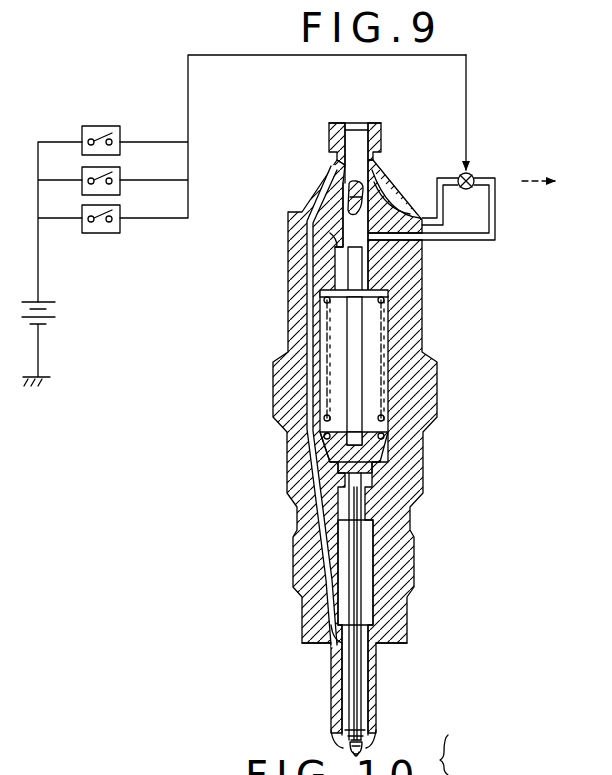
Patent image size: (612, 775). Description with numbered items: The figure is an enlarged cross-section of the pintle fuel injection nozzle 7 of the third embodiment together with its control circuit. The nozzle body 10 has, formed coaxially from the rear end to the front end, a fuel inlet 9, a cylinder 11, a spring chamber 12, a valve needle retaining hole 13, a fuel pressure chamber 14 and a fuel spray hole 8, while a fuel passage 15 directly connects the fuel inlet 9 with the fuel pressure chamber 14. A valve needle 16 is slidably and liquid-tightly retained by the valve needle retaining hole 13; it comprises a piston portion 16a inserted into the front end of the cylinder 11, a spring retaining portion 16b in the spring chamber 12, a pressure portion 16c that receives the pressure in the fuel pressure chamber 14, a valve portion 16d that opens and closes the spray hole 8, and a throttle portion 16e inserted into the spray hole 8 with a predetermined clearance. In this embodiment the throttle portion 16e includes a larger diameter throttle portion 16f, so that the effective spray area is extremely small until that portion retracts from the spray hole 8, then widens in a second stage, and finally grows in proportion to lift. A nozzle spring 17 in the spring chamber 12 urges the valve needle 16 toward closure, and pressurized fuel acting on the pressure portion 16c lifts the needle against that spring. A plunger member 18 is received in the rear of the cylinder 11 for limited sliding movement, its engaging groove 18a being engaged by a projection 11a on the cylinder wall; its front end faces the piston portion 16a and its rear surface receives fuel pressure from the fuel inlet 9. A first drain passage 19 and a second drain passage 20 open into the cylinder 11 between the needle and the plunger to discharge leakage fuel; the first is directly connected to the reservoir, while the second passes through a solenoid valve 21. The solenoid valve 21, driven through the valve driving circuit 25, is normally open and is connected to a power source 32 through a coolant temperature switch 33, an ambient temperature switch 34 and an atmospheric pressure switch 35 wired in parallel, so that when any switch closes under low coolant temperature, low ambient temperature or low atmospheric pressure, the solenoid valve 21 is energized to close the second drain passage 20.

The pintle fuel injection nozzle 7 is at (294, 170).
The fuel spray hole 8 is at (350, 751).
The fuel inlet 9 is at (355, 82).
The nozzle body 10 is at (289, 305).
The cylinder 11 is at (340, 240).
The projection 11a is at (382, 195).
The spring chamber 12 is at (376, 385).
The valve needle retaining hole 13 is at (366, 572).
The fuel pressure chamber 14 is at (372, 632).
The fuel passage 15 is at (312, 432).
The valve needle 16 is at (344, 544).
The piston portion 16a is at (340, 262).
The spring retaining portion 16b is at (396, 476).
The pressure portion 16c is at (330, 641).
The valve portion 16d is at (345, 733).
The throttle portion 16e is at (467, 755).
The larger diameter throttle portion 16f is at (362, 735).
The nozzle spring 17 is at (386, 432).
The plunger member 18 is at (333, 178).
The engaging groove 18a is at (363, 205).
The first drain passage 19 is at (449, 244).
The second drain passage 20 is at (438, 236).
The solenoid valve 21 is at (476, 174).
The valve driving circuit 25 is at (78, 127).
The power source 32 is at (58, 312).
The coolant temperature switch 33 is at (120, 130).
The ambient temperature switch 34 is at (120, 174).
The atmospheric pressure switch 35 is at (120, 213).